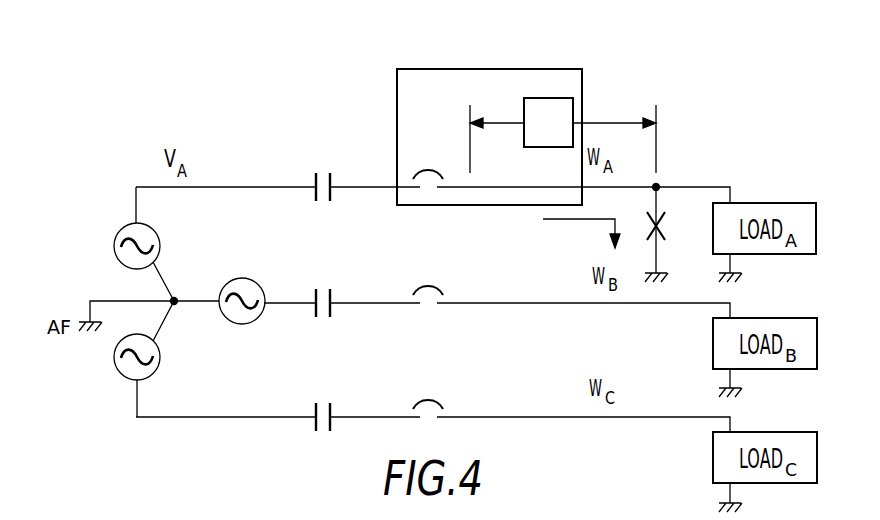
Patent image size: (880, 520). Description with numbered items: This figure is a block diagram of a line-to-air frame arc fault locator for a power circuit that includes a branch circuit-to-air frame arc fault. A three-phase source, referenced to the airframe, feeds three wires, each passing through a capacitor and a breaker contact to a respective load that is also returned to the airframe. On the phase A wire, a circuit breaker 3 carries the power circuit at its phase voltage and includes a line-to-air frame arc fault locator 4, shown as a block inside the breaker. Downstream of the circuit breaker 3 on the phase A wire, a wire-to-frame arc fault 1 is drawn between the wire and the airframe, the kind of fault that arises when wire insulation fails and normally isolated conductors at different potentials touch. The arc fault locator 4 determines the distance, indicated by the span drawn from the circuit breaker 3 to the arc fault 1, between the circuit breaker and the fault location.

The wire-to-frame arc fault 1 is at (662, 221).
The circuit breaker 3 is at (540, 69).
The line-to-air frame arc fault locator 4 is at (560, 98).